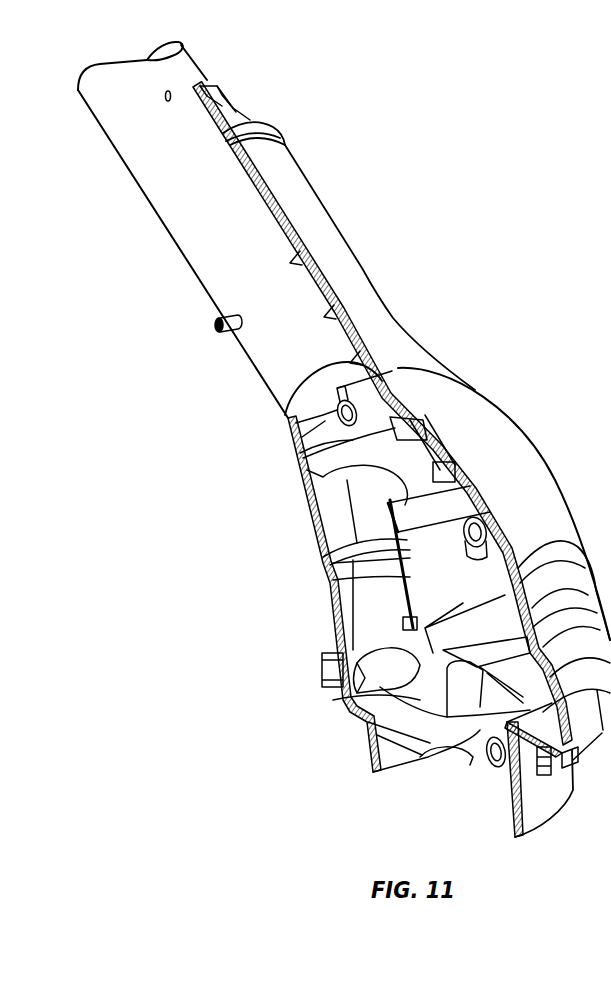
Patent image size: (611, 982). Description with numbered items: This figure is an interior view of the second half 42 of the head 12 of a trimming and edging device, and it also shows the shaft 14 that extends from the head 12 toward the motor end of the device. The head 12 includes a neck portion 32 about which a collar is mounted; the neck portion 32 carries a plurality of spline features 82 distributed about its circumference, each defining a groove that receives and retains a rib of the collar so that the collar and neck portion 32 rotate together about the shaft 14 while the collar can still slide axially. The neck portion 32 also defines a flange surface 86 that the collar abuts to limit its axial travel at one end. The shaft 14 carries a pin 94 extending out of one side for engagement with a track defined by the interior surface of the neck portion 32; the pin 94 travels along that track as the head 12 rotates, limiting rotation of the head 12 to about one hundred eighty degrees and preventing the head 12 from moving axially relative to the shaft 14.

The head 12 is at (530, 416).
The shaft 14 is at (214, 229).
The neck portion 32 is at (330, 257).
The second half 42 is at (302, 177).
The spline feature 82 is at (207, 87).
The flange surface 86 is at (247, 123).
The pin 94 is at (230, 337).